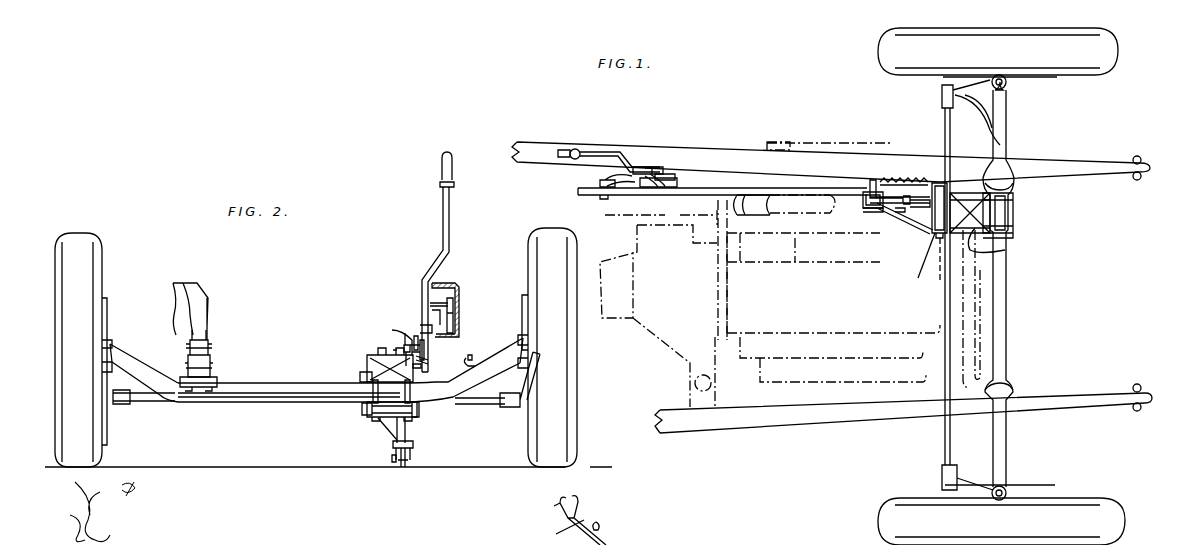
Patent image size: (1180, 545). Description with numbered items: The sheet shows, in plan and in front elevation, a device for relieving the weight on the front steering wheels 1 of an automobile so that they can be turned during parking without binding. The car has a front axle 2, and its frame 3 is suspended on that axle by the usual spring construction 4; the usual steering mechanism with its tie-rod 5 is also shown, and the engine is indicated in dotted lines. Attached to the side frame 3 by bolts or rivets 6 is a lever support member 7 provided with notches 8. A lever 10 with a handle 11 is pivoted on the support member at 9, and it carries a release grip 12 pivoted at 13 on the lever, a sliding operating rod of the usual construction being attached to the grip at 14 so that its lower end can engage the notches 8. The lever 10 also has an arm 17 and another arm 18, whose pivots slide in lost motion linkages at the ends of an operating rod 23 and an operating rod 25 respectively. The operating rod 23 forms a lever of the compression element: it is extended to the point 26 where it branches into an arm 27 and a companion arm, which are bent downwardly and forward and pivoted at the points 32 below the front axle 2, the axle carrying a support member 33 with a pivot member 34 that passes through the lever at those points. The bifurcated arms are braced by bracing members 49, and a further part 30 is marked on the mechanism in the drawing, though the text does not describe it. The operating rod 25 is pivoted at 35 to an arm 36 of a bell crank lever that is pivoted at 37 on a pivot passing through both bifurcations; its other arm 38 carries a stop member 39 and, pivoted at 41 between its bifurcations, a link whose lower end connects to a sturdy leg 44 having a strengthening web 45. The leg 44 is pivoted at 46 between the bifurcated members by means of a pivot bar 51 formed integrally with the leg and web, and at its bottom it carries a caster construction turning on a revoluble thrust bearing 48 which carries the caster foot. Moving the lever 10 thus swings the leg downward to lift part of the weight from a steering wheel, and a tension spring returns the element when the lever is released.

In FIG. 2, the front steering wheels 1 is at (88, 245).
In FIG. 1, the front steering wheels 1 is at (1114, 60).
In FIG. 2, the front axle 2 is at (248, 397).
In FIG. 1, the front axle 2 is at (1008, 288).
In FIG. 2, the frame 3 is at (187, 283).
In FIG. 1, the frame 3 is at (1088, 165).
In FIG. 2, the spring construction 4 is at (212, 362).
In FIG. 2, the tie-rod 5 is at (498, 405).
In FIG. 1, the tie-rod 5 is at (943, 313).
In FIG. 2, the bolts or rivets 6 is at (460, 303).
In FIG. 2, the lever support member 7 is at (455, 314).
In FIG. 1, the lever support member 7 is at (662, 166).
In FIG. 1, the notches 8 is at (646, 166).
In FIG. 2, the lever pivot 9 is at (418, 318).
In FIG. 2, the lever 10 is at (450, 232).
In FIG. 1, the lever 10 is at (600, 152).
In FIG. 2, the handle 11 is at (452, 165).
In FIG. 1, the handle 11 is at (573, 148).
In FIG. 1, the release grip 12 is at (558, 150).
In FIG. 2, the release grip pivot 13 is at (580, 512).
In FIG. 1, the operating rod attachment point 14 is at (907, 180).
In FIG. 1, the arm 17 is at (612, 176).
In FIG. 2, the arm 18 is at (424, 347).
In FIG. 1, the arm 18 is at (670, 178).
In FIG. 2, the operating rod 23 is at (400, 330).
In FIG. 1, the operating rod 23 is at (733, 218).
In FIG. 2, the operating rod 25 is at (425, 358).
In FIG. 1, the operating rod 25 is at (735, 188).
In FIG. 1, the branching point 26 is at (866, 192).
In FIG. 1, the arm 27 is at (936, 182).
In FIG. 1, the slide 30 is at (903, 212).
In FIG. 2, the pivot points 32 is at (368, 420).
In FIG. 2, the support member 33 is at (422, 412).
In FIG. 1, the support member 33 is at (1014, 213).
In FIG. 2, the pivot member 34 is at (362, 408).
In FIG. 1, the pivot 35 is at (874, 178).
In FIG. 2, the arm of bell crank lever 36 is at (404, 348).
In FIG. 1, the arm of bell crank lever 36 is at (880, 195).
In FIG. 1, the bell crank pivot 37 is at (866, 212).
In FIG. 1, the arm of bell crank lever 38 is at (890, 220).
In FIG. 2, the stop member 39 is at (375, 358).
In FIG. 1, the stop member 39 is at (910, 207).
In FIG. 2, the link pivot 41 is at (392, 458).
In FIG. 2, the leg 44 is at (408, 440).
In FIG. 1, the leg 44 is at (955, 180).
In FIG. 2, the strengthening web 45 is at (383, 433).
In FIG. 1, the leg pivot 46 is at (938, 262).
In FIG. 2, the revoluble thrust bearing 48 is at (413, 446).
In FIG. 2, the bracing members 49 is at (362, 378).
In FIG. 1, the bracing members 49 is at (1005, 250).
In FIG. 1, the pivot bar 51 is at (918, 266).